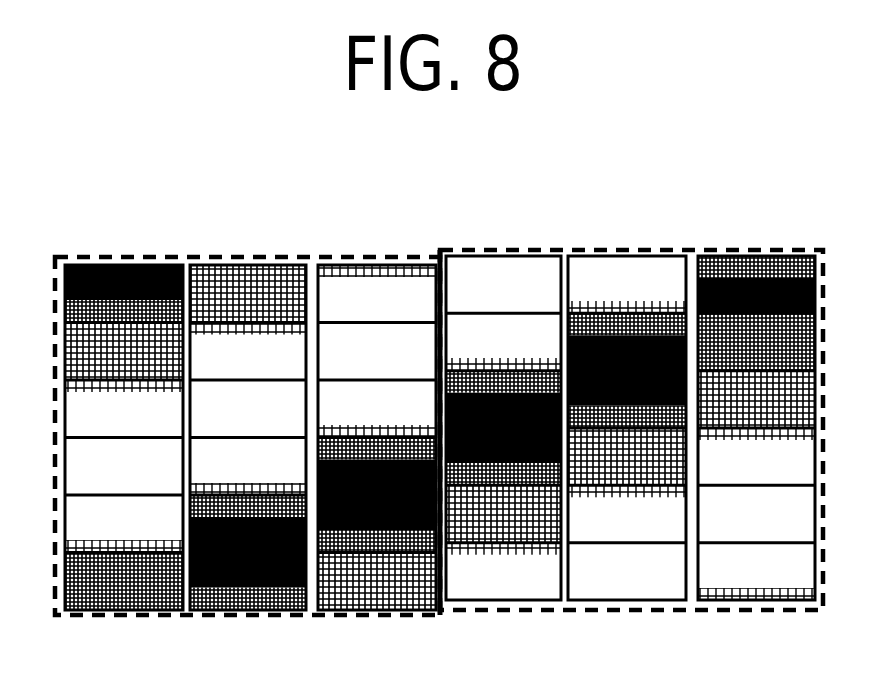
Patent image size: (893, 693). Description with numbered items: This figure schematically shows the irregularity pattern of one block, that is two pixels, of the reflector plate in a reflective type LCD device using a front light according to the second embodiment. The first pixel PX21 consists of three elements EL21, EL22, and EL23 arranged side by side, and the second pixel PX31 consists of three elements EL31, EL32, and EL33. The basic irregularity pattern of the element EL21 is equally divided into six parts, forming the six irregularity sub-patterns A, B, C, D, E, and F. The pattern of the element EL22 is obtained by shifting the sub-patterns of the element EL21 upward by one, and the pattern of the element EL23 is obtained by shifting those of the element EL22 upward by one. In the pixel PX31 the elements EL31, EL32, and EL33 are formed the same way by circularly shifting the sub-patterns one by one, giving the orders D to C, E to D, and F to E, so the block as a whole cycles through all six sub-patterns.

The pixel PX21 is at (255, 240).
The pixel PX31 is at (632, 237).
The element EL21 is at (72, 608).
The element EL22 is at (195, 608).
The element EL23 is at (325, 608).
The element EL31 is at (488, 600).
The element EL32 is at (605, 598).
The element EL33 is at (738, 597).